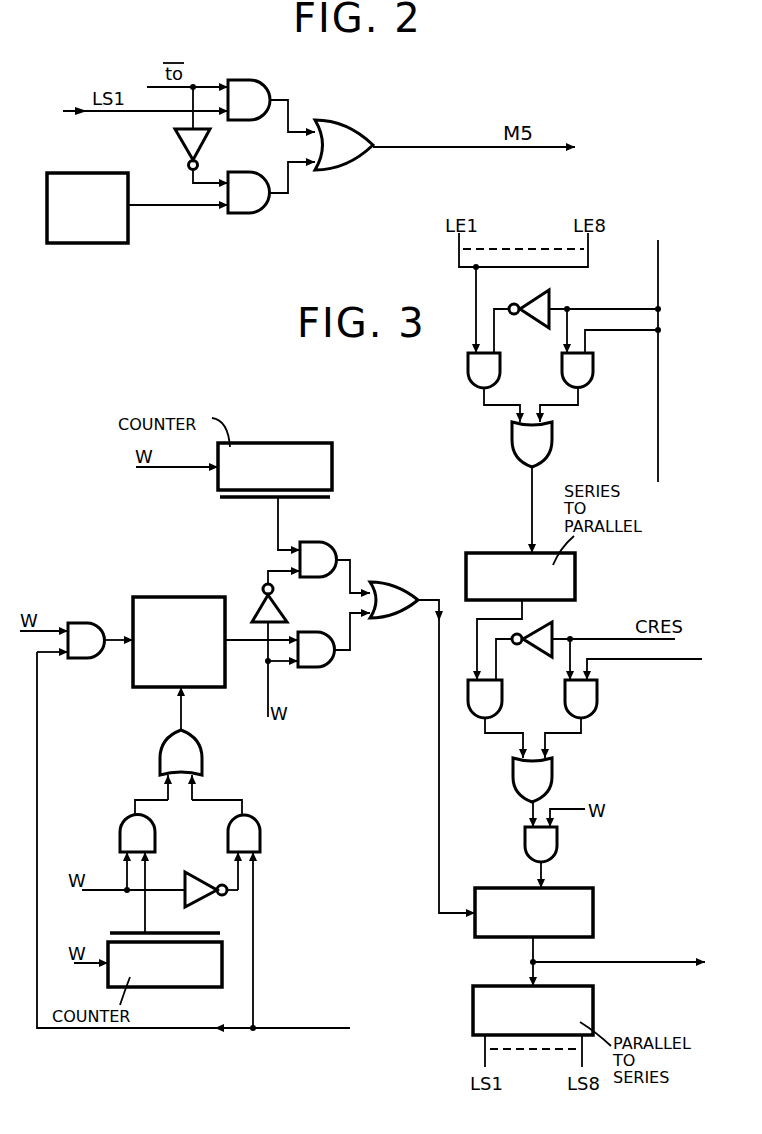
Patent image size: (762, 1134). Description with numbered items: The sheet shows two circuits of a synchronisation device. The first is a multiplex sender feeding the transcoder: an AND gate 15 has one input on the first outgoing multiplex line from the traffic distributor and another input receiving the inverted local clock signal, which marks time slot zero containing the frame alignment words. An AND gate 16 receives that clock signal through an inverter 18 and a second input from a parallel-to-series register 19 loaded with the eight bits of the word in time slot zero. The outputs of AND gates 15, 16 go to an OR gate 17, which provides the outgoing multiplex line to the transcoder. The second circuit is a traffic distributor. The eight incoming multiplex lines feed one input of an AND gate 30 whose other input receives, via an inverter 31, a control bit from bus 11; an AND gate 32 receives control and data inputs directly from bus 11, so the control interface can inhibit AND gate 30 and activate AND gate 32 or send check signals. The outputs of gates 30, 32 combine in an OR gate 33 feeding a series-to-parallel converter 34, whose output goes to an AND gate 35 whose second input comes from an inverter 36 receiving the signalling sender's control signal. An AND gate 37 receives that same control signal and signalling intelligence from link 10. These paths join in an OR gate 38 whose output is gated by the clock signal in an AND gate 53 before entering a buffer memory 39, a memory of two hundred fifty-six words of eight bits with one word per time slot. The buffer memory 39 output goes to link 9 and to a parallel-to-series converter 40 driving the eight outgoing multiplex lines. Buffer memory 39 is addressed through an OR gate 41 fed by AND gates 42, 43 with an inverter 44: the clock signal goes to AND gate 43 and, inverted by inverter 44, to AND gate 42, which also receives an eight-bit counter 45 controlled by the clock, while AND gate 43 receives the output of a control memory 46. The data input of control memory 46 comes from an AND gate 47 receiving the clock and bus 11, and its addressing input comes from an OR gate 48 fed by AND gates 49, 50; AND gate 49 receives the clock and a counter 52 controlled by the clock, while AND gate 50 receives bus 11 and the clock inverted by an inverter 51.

In FIG. 3, the link 9 is at (660, 962).
In FIG. 3, the link 10 is at (677, 660).
In FIG. 3, the bus 11 is at (656, 446).
In FIG. 2, the AND gate 15 is at (245, 108).
In FIG. 2, the AND gate 16 is at (245, 203).
In FIG. 2, the OR gate 17 is at (350, 138).
In FIG. 2, the inverter 18 is at (185, 140).
In FIG. 2, the parallel-to-series register 19 is at (85, 185).
In FIG. 3, the AND gate 30 is at (480, 370).
In FIG. 3, the inverter 31 is at (535, 320).
In FIG. 3, the AND gate 32 is at (582, 370).
In FIG. 3, the OR gate 33 is at (535, 440).
In FIG. 3, the series-to-parallel converter 34 is at (558, 578).
In FIG. 3, the AND gate 35 is at (490, 703).
In FIG. 3, the inverter 36 is at (548, 631).
In FIG. 3, the AND gate 37 is at (583, 703).
In FIG. 3, the OR gate 38 is at (540, 780).
In FIG. 3, the buffer memory 39 is at (578, 918).
In FIG. 3, the parallel-to-series converter 40 is at (580, 1010).
In FIG. 3, the OR gate 41 is at (393, 593).
In FIG. 3, the AND gate 42 is at (322, 555).
In FIG. 3, the AND gate 43 is at (318, 657).
In FIG. 3, the inverter 44 is at (285, 603).
In FIG. 3, the counter 45 is at (277, 452).
In FIG. 3, the control memory 46 is at (180, 608).
In FIG. 3, the AND gate 47 is at (88, 632).
In FIG. 3, the OR gate 48 is at (175, 752).
In FIG. 3, the AND gate 49 is at (130, 828).
In FIG. 3, the AND gate 50 is at (245, 835).
In FIG. 3, the inverter 51 is at (200, 878).
In FIG. 3, the counter 52 is at (165, 975).
In FIG. 3, the AND gate 53 is at (535, 848).